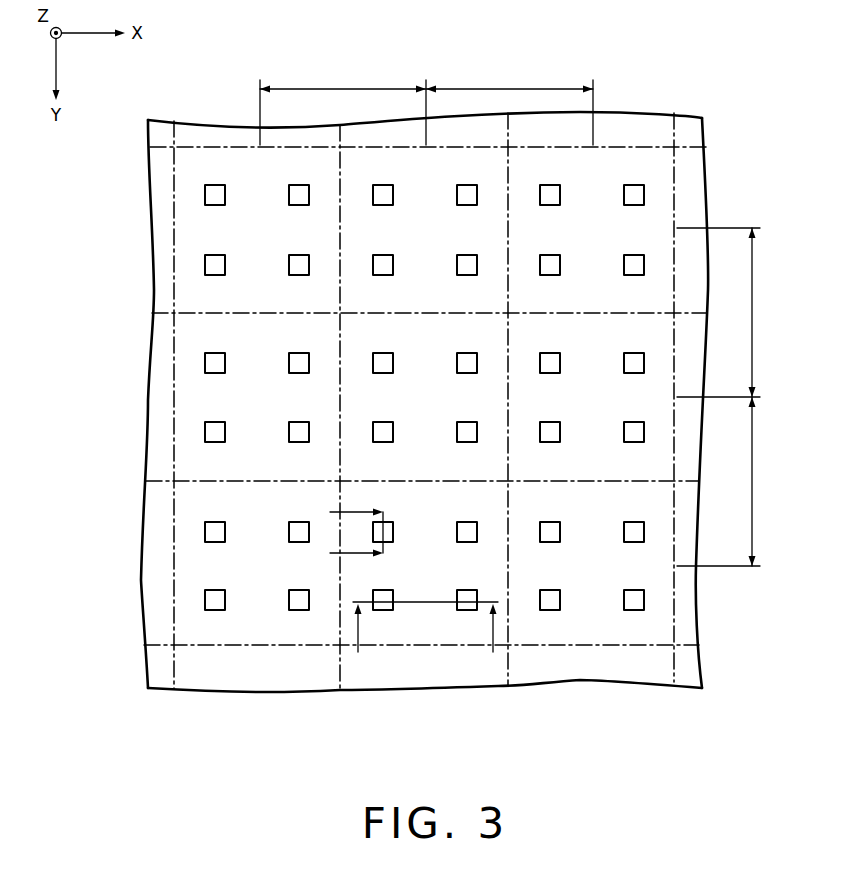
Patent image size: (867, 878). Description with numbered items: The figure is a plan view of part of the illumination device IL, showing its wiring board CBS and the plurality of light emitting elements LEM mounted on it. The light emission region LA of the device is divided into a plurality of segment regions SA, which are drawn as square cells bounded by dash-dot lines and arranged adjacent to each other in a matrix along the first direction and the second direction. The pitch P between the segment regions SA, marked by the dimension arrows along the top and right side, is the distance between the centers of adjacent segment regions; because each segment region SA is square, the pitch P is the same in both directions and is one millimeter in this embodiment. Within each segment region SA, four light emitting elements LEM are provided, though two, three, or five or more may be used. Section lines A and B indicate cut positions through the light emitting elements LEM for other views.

The light emitting element LEM is at (289, 265).
The segment region SA is at (188, 147).
The pitch P is at (514, 315).
The illumination device IL is at (479, 406).
The wiring board CBS is at (714, 660).
The light emission region LA is at (687, 699).
The section line A- A is at (425, 642).
The section line B- B is at (348, 532).